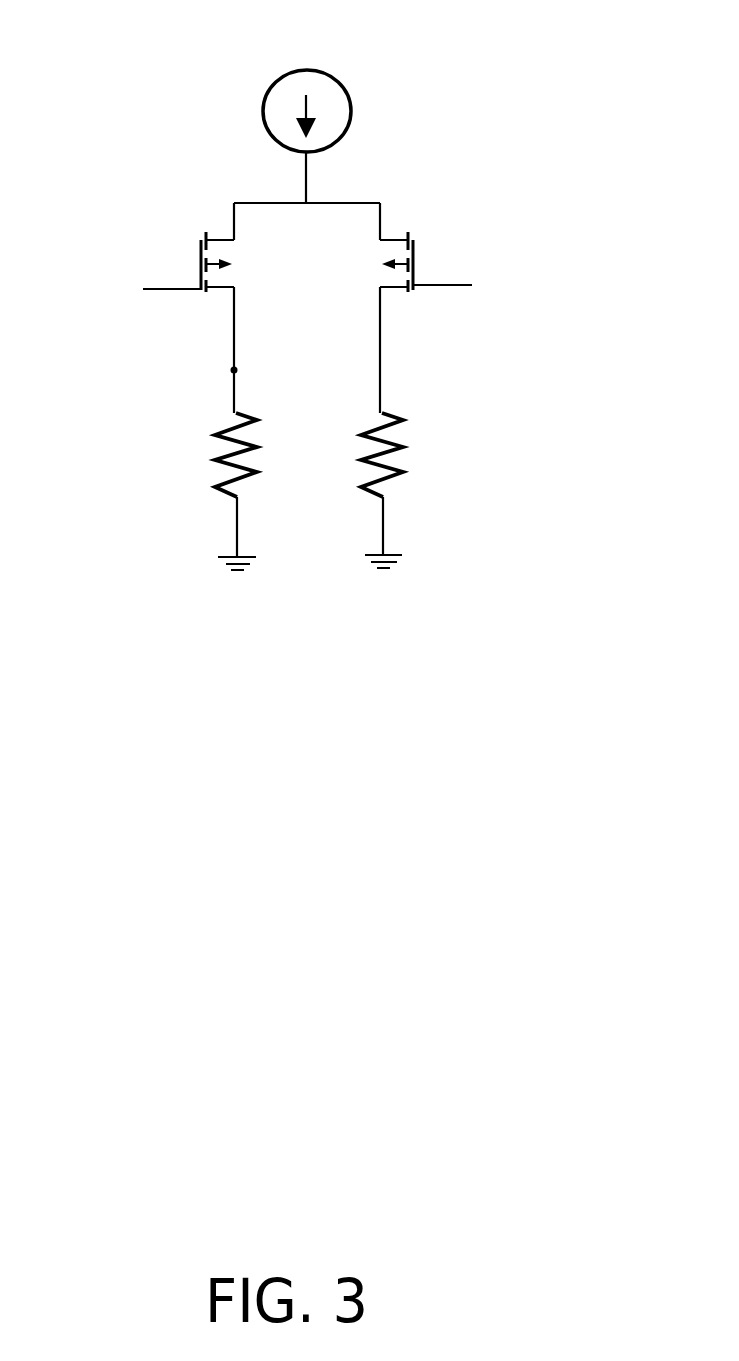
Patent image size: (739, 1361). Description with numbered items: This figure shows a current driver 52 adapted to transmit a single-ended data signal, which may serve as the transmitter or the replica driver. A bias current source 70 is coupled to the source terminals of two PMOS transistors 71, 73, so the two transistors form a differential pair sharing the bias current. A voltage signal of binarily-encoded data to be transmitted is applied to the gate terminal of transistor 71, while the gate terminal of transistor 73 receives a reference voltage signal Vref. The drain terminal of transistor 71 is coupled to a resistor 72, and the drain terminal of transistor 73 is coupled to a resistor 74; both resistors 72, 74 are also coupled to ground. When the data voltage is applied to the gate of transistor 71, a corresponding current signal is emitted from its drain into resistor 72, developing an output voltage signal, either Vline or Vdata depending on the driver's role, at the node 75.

The differential amplifier circuit 52 is at (301, 389).
The bias current source 70 is at (306, 70).
The PMOS transistor 71 is at (239, 262).
The resistor 72 is at (210, 455).
The PMOS transistor 73 is at (371, 262).
The resistor 74 is at (408, 455).
The node 75 is at (210, 367).